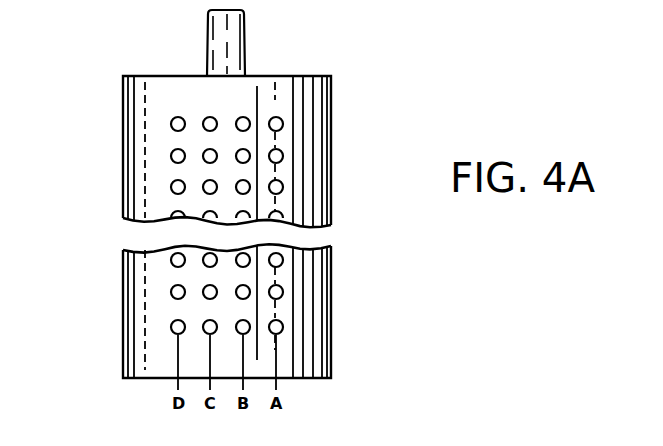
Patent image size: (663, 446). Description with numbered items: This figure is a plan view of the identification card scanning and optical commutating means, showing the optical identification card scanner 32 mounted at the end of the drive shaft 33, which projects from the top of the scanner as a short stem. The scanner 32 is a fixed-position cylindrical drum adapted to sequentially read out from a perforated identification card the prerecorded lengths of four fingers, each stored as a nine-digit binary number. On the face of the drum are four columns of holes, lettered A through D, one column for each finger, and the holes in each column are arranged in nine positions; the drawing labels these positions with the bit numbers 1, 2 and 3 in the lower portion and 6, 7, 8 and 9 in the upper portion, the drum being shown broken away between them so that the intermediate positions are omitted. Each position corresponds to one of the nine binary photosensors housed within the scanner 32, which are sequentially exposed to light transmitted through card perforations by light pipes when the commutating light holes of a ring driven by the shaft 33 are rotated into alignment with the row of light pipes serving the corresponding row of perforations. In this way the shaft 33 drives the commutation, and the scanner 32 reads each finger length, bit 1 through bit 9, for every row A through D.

The first binary bit position 1 is at (283, 327).
The second binary bit position 2 is at (283, 292).
The third binary bit position 3 is at (283, 260).
The sixth binary bit position 6 is at (283, 220).
The seventh binary bit position 7 is at (283, 188).
The eighth binary bit position 8 is at (283, 156).
The ninth binary bit position 9 is at (283, 124).
The optical identification card scanner 32 is at (131, 168).
The drive shaft 33 is at (233, 45).